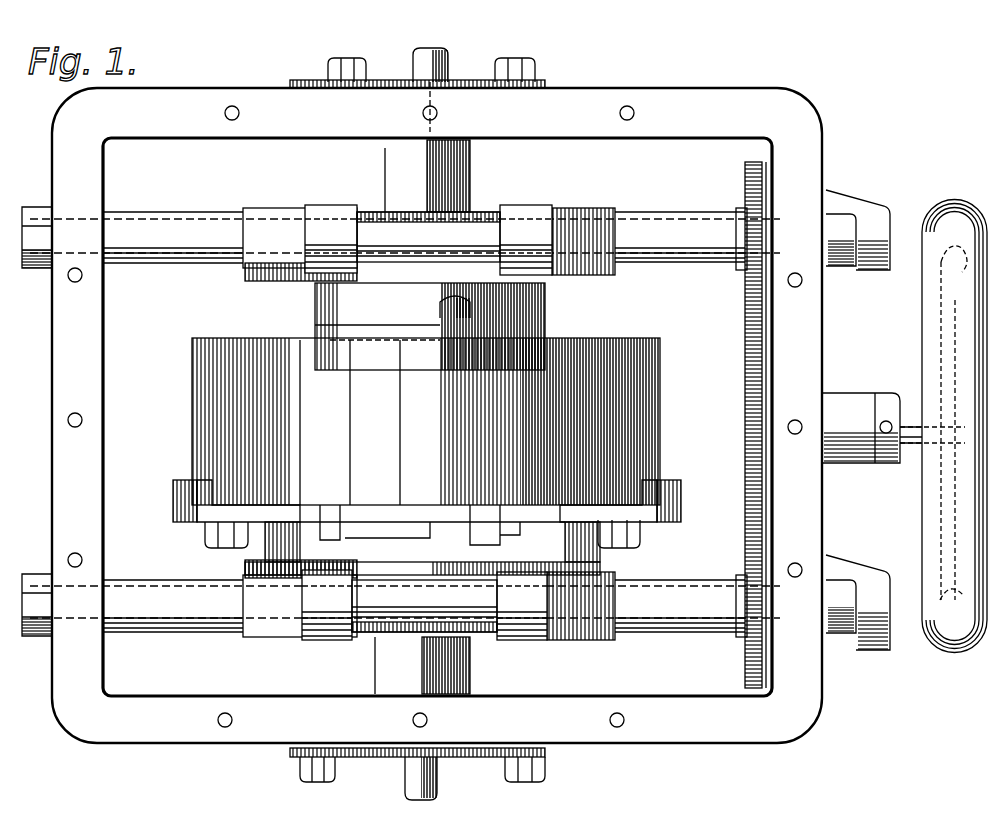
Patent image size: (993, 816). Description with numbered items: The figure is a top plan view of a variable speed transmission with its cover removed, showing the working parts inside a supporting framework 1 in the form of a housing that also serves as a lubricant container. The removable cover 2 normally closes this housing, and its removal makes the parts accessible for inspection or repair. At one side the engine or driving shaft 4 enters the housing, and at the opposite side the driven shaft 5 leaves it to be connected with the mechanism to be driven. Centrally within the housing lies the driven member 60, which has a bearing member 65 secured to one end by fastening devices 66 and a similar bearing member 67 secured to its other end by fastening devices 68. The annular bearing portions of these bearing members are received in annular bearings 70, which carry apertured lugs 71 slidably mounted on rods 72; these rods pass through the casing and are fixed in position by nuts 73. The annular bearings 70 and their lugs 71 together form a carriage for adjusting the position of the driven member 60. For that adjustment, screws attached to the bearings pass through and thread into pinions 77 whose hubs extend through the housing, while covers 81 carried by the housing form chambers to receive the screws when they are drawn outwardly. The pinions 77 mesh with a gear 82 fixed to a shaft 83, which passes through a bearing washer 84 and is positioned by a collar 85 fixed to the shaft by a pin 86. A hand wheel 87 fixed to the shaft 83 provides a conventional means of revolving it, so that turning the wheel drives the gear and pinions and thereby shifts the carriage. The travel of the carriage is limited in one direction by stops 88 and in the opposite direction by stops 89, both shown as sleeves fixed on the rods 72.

The supporting framework 1 is at (808, 160).
The removable cover 2 is at (402, 46).
The engine or driving shaft 4 is at (412, 772).
The driven shaft 5 is at (440, 68).
The driven member 60 is at (427, 430).
The bearing member 65 is at (378, 565).
The fastening devices 66 is at (226, 546).
The bearing member 67 is at (332, 300).
The fastening devices 68 is at (440, 310).
The annular bearings 70 is at (288, 270).
The apertured lugs 71 is at (330, 215).
The rods 72 is at (470, 232).
The nuts 73 is at (840, 215).
The pinions 77 is at (744, 288).
The covers 81 is at (872, 215).
The gear 82 is at (744, 372).
The shaft 83 is at (916, 447).
The bearing washer 84 is at (840, 420).
The collar 85 is at (880, 395).
The pin 86 is at (890, 420).
The hand wheel 87 is at (944, 640).
The stops 88 is at (185, 213).
The stops 89 is at (678, 213).